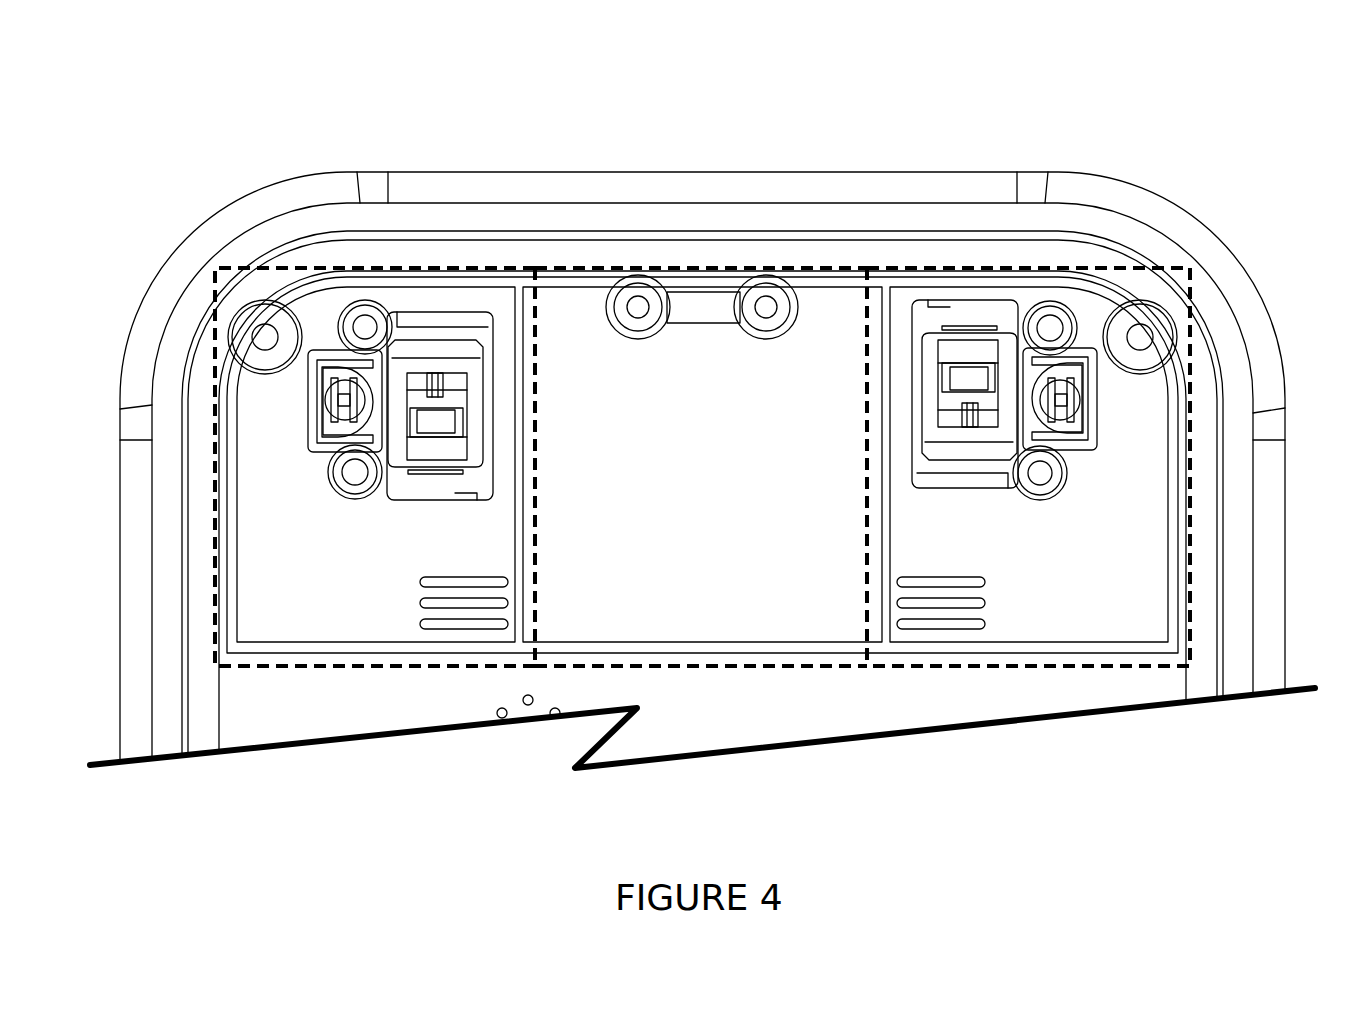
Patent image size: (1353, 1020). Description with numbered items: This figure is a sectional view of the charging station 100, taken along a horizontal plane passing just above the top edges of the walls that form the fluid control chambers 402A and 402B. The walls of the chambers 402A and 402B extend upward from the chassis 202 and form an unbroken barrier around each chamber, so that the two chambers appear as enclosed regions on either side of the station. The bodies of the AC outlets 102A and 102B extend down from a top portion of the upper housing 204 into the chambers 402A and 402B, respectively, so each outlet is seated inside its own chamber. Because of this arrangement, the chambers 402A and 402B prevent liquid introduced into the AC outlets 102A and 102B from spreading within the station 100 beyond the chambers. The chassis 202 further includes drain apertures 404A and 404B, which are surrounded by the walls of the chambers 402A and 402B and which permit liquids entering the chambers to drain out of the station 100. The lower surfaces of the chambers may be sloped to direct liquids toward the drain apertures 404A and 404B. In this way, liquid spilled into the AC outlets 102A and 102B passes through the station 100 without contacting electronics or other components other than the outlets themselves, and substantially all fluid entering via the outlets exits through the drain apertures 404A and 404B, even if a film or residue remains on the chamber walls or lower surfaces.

The charging station 100 is at (303, 150).
The upper housing 204 is at (217, 215).
The AC outlet 102A is at (445, 313).
The AC outlet 102B is at (975, 299).
The fluid control chamber 402A is at (535, 317).
The fluid control chamber 402B is at (867, 317).
The drain aperture 404A is at (508, 603).
The drain aperture 404B is at (897, 603).
The chassis 202 is at (730, 710).